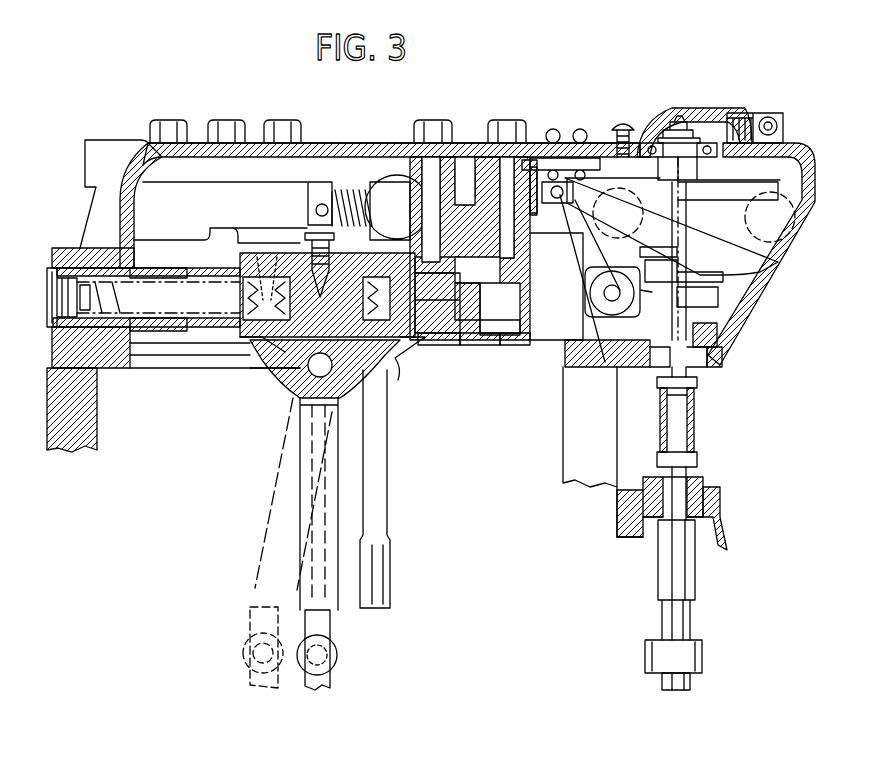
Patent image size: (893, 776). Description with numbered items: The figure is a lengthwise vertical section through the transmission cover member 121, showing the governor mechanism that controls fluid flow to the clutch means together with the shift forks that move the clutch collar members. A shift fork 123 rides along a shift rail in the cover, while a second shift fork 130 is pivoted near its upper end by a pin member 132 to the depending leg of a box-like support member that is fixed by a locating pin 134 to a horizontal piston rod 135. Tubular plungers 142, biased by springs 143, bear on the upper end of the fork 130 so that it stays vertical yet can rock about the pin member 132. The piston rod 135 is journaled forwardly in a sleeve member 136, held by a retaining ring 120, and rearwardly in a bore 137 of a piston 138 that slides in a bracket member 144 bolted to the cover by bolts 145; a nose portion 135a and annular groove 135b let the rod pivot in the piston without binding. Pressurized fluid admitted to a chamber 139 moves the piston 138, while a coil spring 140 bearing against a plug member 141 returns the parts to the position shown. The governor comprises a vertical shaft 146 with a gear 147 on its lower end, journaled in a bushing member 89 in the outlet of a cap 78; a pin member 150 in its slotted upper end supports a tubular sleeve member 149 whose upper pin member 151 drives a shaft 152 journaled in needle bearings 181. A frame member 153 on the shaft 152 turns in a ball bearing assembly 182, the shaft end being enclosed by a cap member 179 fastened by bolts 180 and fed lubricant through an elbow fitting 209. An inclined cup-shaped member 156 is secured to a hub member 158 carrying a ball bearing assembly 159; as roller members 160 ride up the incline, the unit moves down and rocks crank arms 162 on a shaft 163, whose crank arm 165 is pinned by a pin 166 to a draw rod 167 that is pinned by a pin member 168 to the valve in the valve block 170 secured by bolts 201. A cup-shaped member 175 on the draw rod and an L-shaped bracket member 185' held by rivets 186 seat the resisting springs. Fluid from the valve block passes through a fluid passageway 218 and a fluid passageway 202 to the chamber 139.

The cap 78 is at (722, 525).
The bushing member 89 is at (712, 480).
The retaining ring 120 is at (146, 252).
The cover member 121 is at (320, 143).
The shift fork 123 is at (375, 500).
The shift fork 130 is at (335, 605).
The pin member 132 is at (293, 397).
The locating pin 134 is at (327, 295).
The piston rod 135 is at (430, 335).
The nose portion 135a is at (475, 296).
The annular groove 135b is at (437, 345).
The sleeve member 136 is at (150, 340).
The bore 137 is at (480, 340).
The piston 138 is at (512, 340).
The chamber 139 is at (515, 322).
The coil spring 140 is at (243, 282).
The plug member 141 is at (50, 266).
The tubular plungers 142 is at (250, 340).
The springs 143 is at (265, 250).
The bracket member 144 is at (530, 262).
The bolts 145 is at (428, 120).
The governor shaft 146 is at (690, 577).
The gear 147 is at (695, 658).
The tubular sleeve member 149 is at (696, 420).
The pin member 150 is at (697, 457).
The pin member 151 is at (700, 382).
The shaft 152 is at (722, 358).
The frame member 153 is at (692, 174).
The cup-shaped member 156 is at (778, 262).
The hub member 158 is at (692, 276).
The ball bearing assembly 159 is at (650, 290).
The roller members 160 is at (760, 200).
The crank arms 162 is at (640, 340).
The shaft 163 is at (618, 314).
The crank arm 165 is at (572, 228).
The pin 166 is at (565, 192).
The draw rod 167 is at (390, 205).
The pin member 168 is at (308, 195).
The valve block 170 is at (150, 195).
The cup-shaped member 175 is at (328, 205).
The cap member 179 is at (680, 108).
The bolts 180 is at (618, 118).
The needle bearings 181 is at (720, 337).
The ball bearing assembly 182 is at (646, 125).
The L-shaped bracket member 185' is at (536, 160).
The rivets 186 is at (582, 138).
The bolts 201 is at (280, 122).
The fluid passageway 202 is at (518, 120).
The elbow fitting 209 is at (766, 112).
The fluid passageway 218 is at (498, 150).